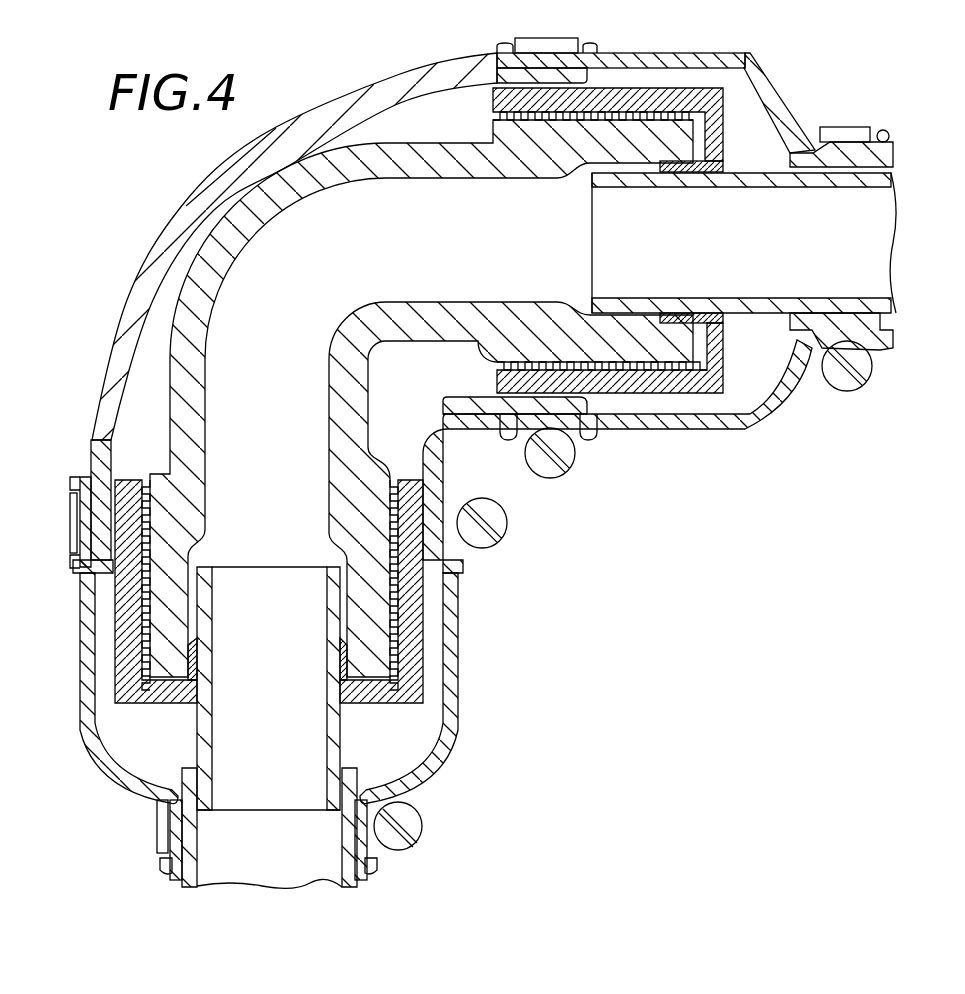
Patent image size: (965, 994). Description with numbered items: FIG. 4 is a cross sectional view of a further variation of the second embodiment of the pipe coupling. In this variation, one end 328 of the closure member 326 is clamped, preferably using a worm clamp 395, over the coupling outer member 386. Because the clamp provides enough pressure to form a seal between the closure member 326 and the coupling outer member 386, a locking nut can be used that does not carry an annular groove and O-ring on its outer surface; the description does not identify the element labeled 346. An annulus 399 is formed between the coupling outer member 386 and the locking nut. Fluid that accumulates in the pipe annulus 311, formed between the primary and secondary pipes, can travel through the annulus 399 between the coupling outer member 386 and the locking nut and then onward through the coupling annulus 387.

The pipe annulus 311 is at (888, 314).
The closure member 326 is at (783, 78).
The end of the closure member 328 is at (891, 136).
The threaded nut 346 is at (493, 105).
The coupling outer member 386 is at (232, 190).
The coupling annulus 387 is at (223, 242).
The worm clamp 395 is at (558, 38).
The annulus 399 is at (500, 68).